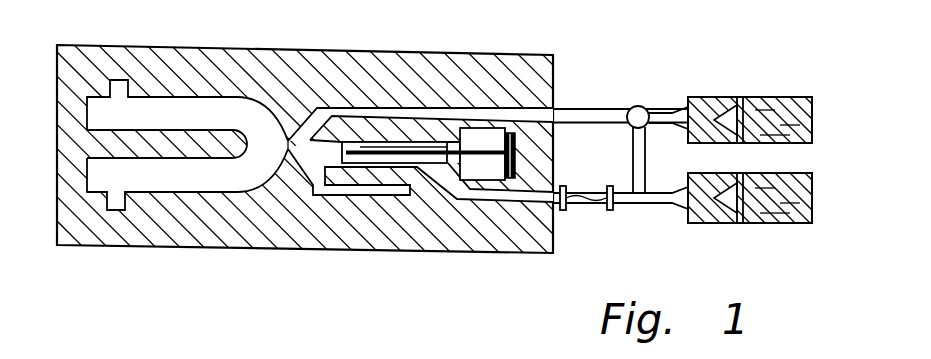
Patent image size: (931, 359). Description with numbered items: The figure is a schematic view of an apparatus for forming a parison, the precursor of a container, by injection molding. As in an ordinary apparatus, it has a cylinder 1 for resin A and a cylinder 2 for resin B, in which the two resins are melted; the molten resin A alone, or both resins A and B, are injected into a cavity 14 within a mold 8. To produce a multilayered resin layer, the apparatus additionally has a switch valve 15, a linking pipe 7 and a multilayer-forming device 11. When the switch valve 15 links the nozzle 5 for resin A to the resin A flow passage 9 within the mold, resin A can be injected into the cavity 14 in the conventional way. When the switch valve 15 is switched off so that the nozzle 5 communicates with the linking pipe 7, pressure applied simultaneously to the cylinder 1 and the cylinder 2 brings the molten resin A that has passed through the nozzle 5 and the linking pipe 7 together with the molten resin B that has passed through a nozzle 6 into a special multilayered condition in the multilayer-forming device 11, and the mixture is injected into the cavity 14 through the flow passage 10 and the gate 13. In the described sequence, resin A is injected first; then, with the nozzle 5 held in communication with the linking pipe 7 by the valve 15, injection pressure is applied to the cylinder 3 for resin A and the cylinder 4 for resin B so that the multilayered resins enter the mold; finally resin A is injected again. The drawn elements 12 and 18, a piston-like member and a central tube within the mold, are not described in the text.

The cylinder for resin A 1 is at (778, 97).
The cylinder for resin B 2 is at (779, 224).
The cylinder for resin A 3 is at (703, 97).
The cylinder for resin B 4 is at (708, 224).
The nozzle for resin A 5 is at (660, 108).
The nozzle for resin B 6 is at (655, 207).
The linking pipe 7 is at (633, 163).
The mold 8 is at (436, 54).
The resin A flow passage 9 is at (543, 107).
The flow passage 10 is at (512, 204).
The multilayer-forming device 11 is at (594, 212).
The control piston 12 is at (474, 136).
The gate 13 is at (290, 140).
The cavity 14 is at (181, 103).
The switch valve 15 is at (630, 108).
The control tube 18 is at (352, 143).